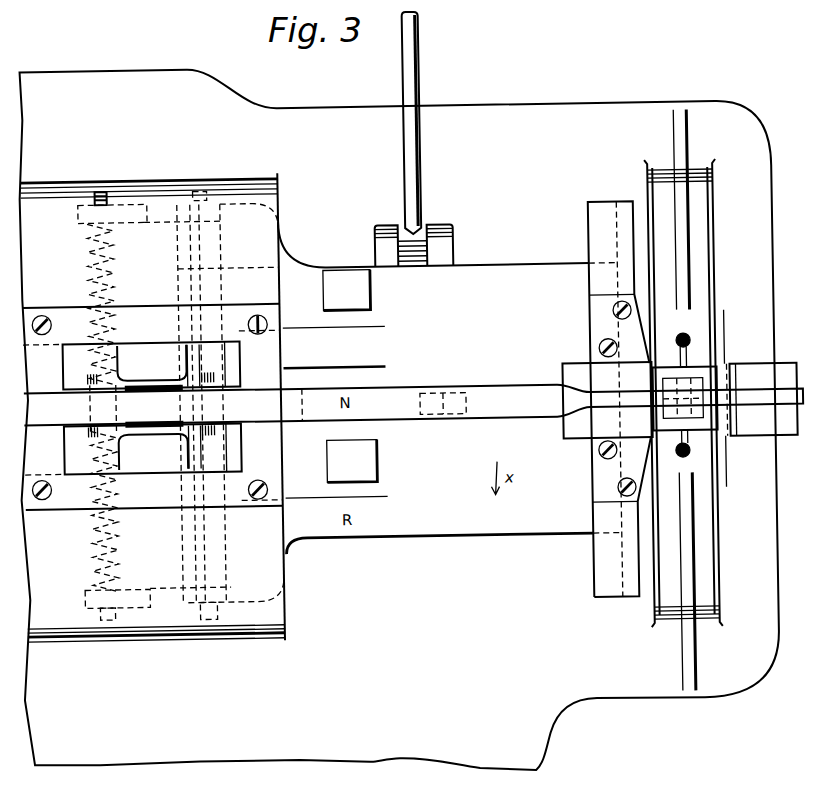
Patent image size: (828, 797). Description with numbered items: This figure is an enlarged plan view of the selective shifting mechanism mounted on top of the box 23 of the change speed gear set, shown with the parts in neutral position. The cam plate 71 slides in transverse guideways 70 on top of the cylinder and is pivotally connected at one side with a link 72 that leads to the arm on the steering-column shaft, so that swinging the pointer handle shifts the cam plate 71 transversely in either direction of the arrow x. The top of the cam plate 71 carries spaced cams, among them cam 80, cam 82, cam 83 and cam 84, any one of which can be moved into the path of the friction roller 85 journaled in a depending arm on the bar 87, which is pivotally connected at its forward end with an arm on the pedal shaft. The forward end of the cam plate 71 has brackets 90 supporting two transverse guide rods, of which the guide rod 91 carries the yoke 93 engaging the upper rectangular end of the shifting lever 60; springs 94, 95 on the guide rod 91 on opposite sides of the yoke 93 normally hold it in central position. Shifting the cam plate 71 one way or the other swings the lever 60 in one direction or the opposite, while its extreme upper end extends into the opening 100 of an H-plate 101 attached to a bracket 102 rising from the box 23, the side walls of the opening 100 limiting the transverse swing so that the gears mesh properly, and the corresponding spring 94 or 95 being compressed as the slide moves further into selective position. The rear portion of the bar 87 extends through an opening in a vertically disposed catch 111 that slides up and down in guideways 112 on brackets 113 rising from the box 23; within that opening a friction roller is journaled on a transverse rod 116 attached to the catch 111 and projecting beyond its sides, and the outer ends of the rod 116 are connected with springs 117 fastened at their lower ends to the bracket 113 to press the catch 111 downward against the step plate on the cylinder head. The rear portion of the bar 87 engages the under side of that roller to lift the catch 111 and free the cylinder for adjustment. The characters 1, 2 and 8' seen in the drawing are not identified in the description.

The lower chamber 1 is at (352, 461).
The upper chamber 2 is at (325, 380).
The lower block 8' is at (362, 460).
The box of the change speed gear set 23 is at (398, 419).
The shifting lever 60 is at (136, 425).
The transverse guideways 70 is at (281, 600).
The cam plate 71 is at (489, 268).
The link 72 is at (416, 65).
The cam 80 is at (363, 531).
The cam 82 is at (368, 384).
The cam 83 is at (373, 329).
The cam 84 is at (337, 266).
The friction roller 85 is at (452, 406).
The bar 87 is at (492, 392).
The brackets 90 is at (128, 201).
The guide rod 91 is at (208, 240).
The yoke 93 is at (150, 374).
The spring 94 is at (110, 275).
The spring 95 is at (94, 540).
The opening of the H-plate 100 is at (153, 448).
The H-plate 101 is at (152, 407).
The bracket 102 is at (233, 622).
The catch 111 is at (661, 417).
The guideways 112 is at (661, 376).
The brackets 113 is at (714, 280).
The transverse rod 116 is at (686, 360).
The springs 117 is at (685, 337).